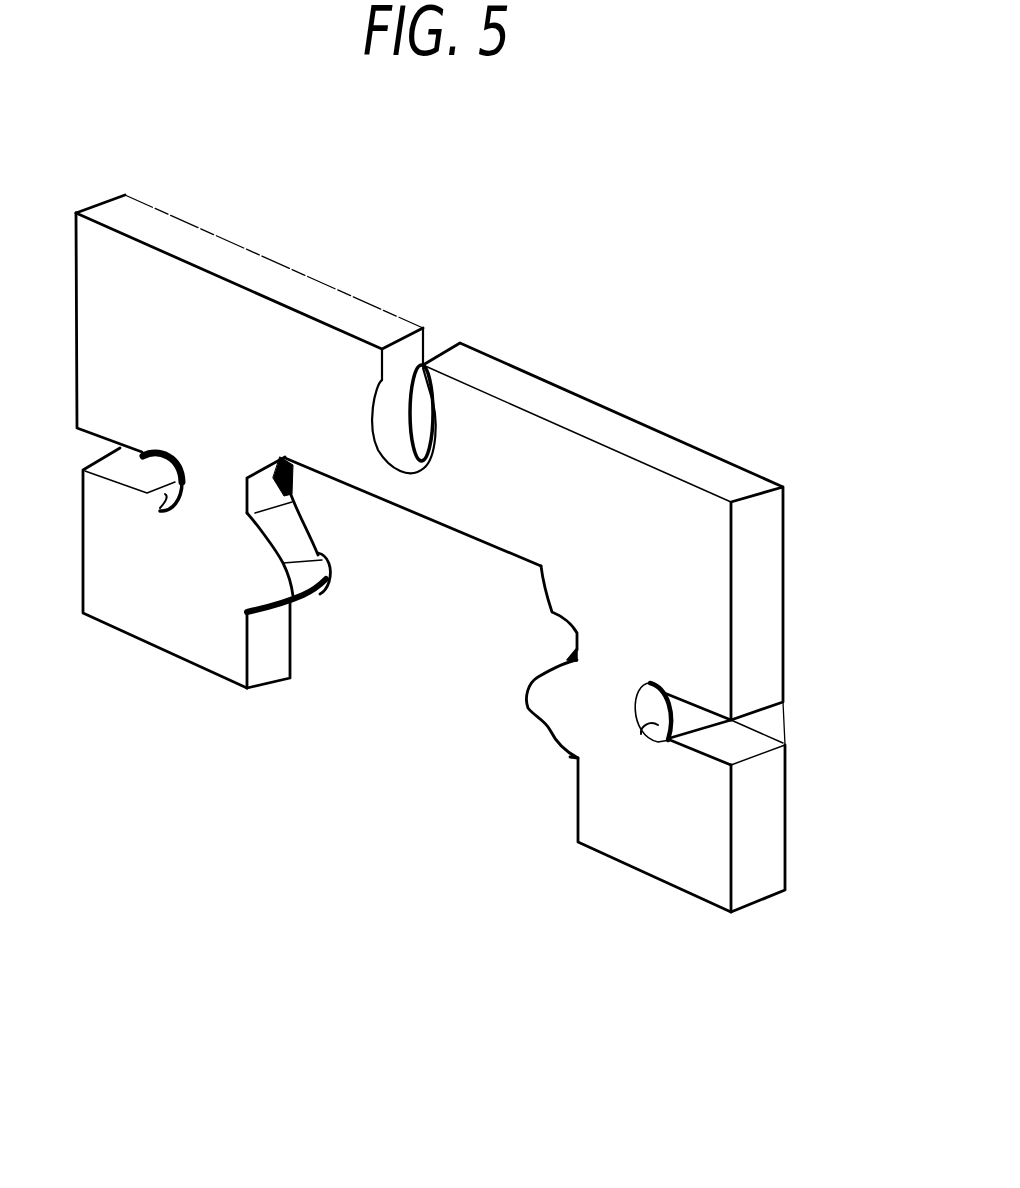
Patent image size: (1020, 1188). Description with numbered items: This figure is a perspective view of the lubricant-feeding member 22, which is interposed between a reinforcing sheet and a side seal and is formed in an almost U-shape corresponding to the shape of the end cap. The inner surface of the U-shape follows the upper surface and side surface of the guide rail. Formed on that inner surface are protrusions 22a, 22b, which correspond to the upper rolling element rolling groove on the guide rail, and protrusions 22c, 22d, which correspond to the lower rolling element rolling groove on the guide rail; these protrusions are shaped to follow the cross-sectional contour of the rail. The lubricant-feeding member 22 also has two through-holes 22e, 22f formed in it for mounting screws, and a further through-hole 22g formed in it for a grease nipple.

The lubricant-feeding member 22 is at (760, 560).
The protrusion 22a is at (291, 492).
The protrusion 22b is at (552, 612).
The protrusion 22c is at (324, 592).
The protrusion 22d is at (527, 708).
The through-hole for mounting screw 22e is at (641, 734).
The through-hole for mounting screw 22f is at (148, 495).
The through-hole for grease nipple 22g is at (397, 447).